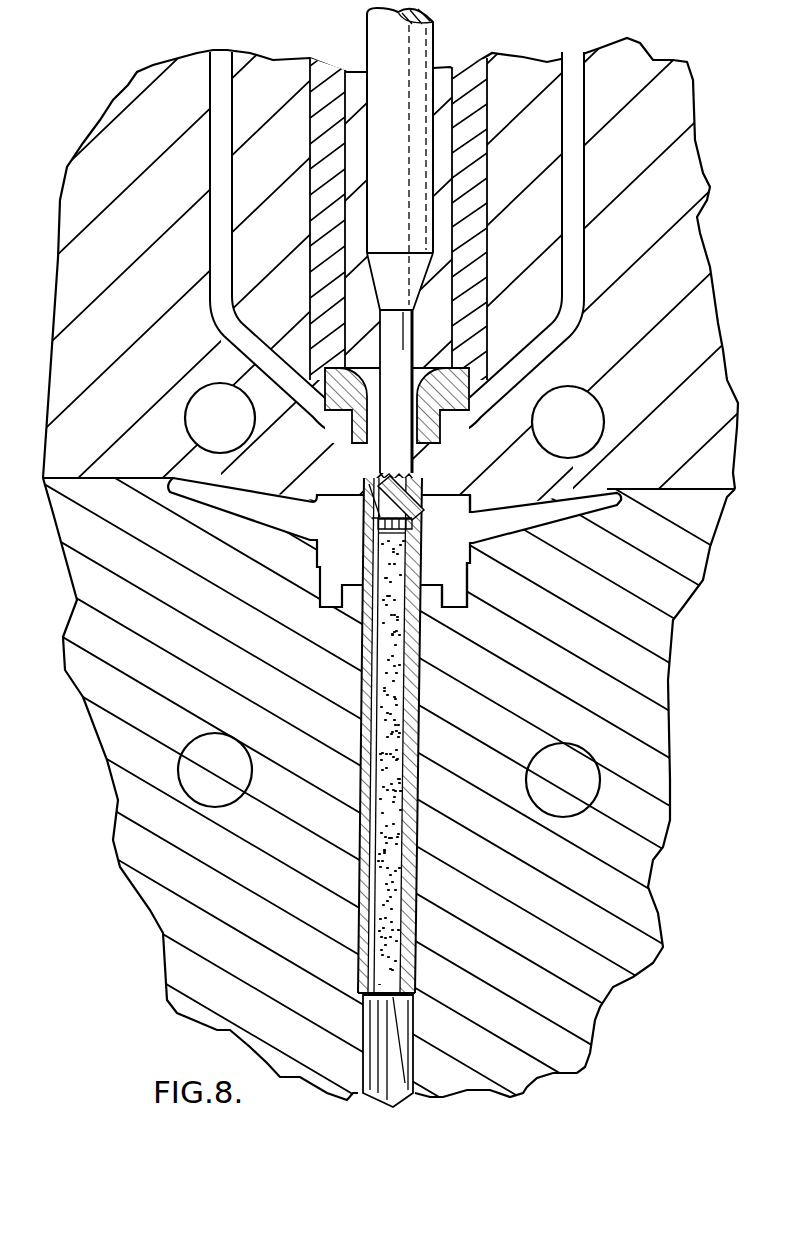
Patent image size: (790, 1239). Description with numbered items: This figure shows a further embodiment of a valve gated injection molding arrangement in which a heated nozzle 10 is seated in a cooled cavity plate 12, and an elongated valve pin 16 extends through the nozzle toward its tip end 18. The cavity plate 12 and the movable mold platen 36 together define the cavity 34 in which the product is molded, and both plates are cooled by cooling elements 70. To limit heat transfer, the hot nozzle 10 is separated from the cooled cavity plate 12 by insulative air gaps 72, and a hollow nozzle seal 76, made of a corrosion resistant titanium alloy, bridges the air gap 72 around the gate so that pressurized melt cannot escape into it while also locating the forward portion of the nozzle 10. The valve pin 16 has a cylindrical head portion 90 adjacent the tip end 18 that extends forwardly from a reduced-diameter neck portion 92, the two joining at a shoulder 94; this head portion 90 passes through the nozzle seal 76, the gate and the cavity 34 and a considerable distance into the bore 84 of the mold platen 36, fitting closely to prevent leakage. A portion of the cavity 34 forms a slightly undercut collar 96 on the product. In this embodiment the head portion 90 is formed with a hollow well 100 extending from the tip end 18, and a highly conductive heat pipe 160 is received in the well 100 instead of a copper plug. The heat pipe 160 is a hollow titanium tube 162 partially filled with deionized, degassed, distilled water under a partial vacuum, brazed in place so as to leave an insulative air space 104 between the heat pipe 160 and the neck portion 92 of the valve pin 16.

The heated nozzle 10 is at (530, 75).
The cavity plate 12 is at (690, 231).
The valve pin 16 is at (433, 45).
The tip end 18 is at (405, 1098).
The cavity 34 is at (588, 503).
The movable mold platen 36 is at (630, 875).
The cooling elements 70 is at (578, 430).
The insulative air gaps 72 is at (582, 168).
The nozzle seal 76 is at (470, 410).
The bore 84 is at (363, 1060).
The head portion 90 is at (441, 807).
The neck portion 92 is at (410, 347).
The shoulder 94 is at (437, 478).
The undercut collar 96 is at (473, 593).
The hollow well 100 is at (420, 650).
The insulative air space 104 is at (478, 556).
The heat pipe 160 is at (420, 800).
The hollow titanium tube 162 is at (420, 770).